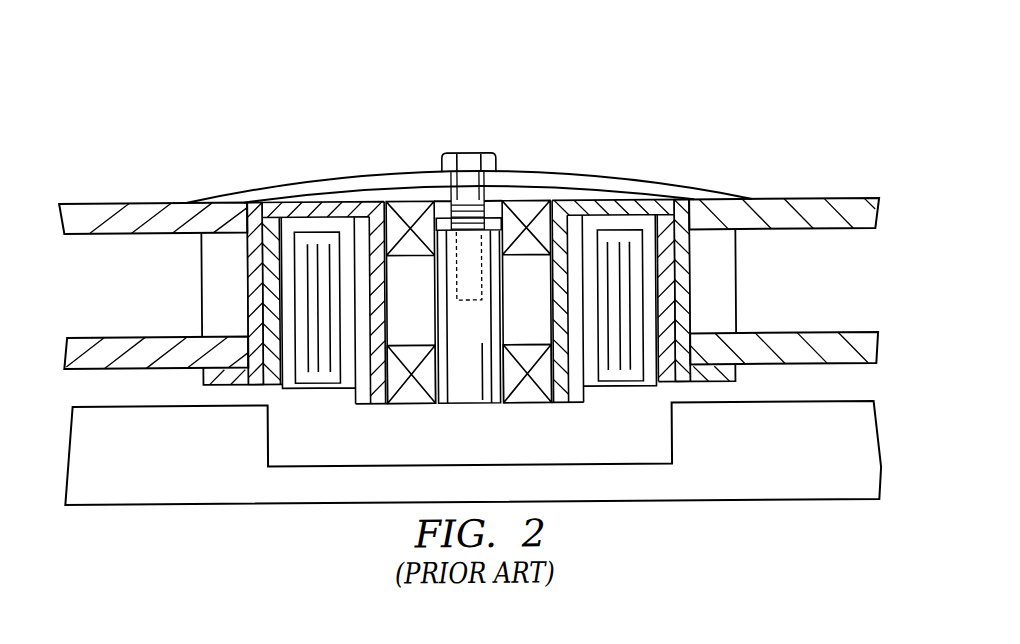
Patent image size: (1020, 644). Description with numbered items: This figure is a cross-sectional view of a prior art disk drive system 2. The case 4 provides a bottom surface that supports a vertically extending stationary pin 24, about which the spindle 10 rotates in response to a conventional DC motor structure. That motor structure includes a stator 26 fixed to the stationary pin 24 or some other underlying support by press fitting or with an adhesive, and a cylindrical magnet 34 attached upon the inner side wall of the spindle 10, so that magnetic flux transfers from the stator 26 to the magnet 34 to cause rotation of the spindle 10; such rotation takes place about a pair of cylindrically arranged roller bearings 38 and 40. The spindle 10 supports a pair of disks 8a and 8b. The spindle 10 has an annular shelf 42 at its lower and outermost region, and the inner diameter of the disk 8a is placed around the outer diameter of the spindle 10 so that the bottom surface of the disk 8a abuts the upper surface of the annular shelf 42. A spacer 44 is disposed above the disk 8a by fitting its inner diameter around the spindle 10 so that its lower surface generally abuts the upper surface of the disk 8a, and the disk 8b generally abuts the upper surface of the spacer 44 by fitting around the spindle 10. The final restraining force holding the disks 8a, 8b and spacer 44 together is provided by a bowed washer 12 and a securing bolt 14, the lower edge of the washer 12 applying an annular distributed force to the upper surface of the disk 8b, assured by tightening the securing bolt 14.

The disk drive system 2 is at (585, 84).
The case 4 is at (788, 461).
The disk 8a is at (103, 334).
The disk 8b is at (103, 199).
The spindle 10 is at (260, 209).
The bowed washer 12 is at (410, 170).
The securing bolt 14 is at (457, 152).
The stationary pin 24 is at (483, 331).
The stator 26 is at (313, 370).
The cylindrical magnet 34 is at (275, 375).
The roller bearing 38 is at (420, 252).
The roller bearing 40 is at (413, 396).
The annular shelf 42 is at (201, 371).
The spacer 44 is at (201, 268).